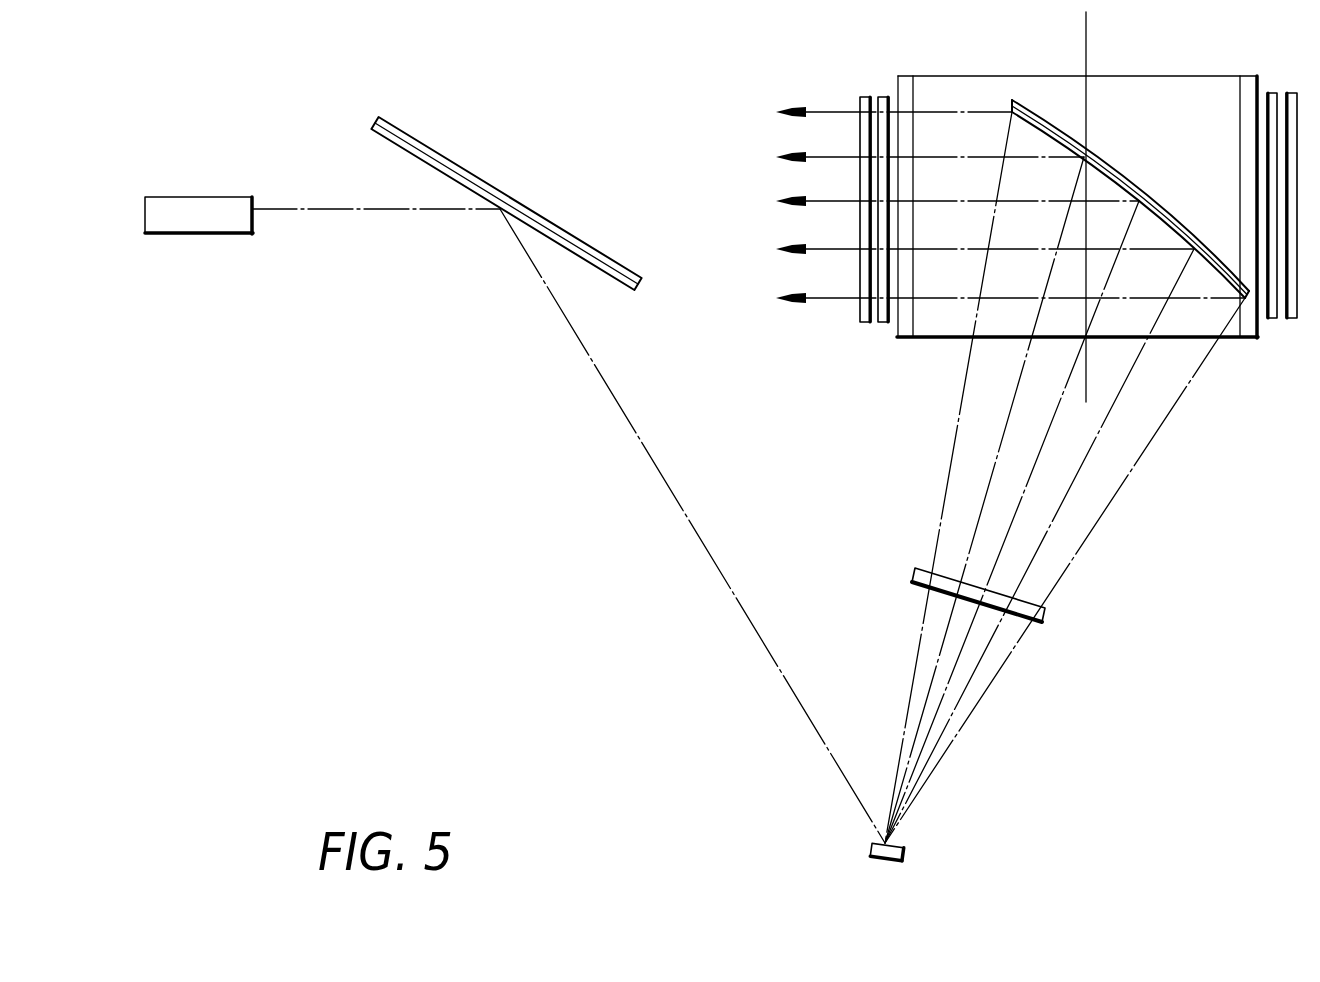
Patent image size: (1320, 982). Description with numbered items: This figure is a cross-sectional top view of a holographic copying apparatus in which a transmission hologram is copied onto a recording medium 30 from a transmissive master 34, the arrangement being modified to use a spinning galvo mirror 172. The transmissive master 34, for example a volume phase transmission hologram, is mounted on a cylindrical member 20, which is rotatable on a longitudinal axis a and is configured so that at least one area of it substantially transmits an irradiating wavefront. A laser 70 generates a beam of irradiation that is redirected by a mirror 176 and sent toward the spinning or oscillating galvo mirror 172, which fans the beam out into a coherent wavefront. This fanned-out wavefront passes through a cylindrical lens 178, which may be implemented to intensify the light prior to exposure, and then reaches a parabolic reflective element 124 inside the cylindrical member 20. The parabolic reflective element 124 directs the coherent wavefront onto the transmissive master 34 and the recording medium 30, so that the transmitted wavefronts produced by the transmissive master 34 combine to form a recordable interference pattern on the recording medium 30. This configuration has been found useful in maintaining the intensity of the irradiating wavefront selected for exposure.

The cylindrical member 20 is at (891, 78).
The recording medium 30 is at (865, 324).
The transmissive master 34 is at (880, 323).
The laser 70 is at (226, 196).
The parabolic reflective element 124 is at (1122, 168).
The galvo mirror 172 is at (905, 856).
The mirror 176 is at (575, 230).
The cylindrical lens 178 is at (1045, 616).
The axis a is at (1085, 50).